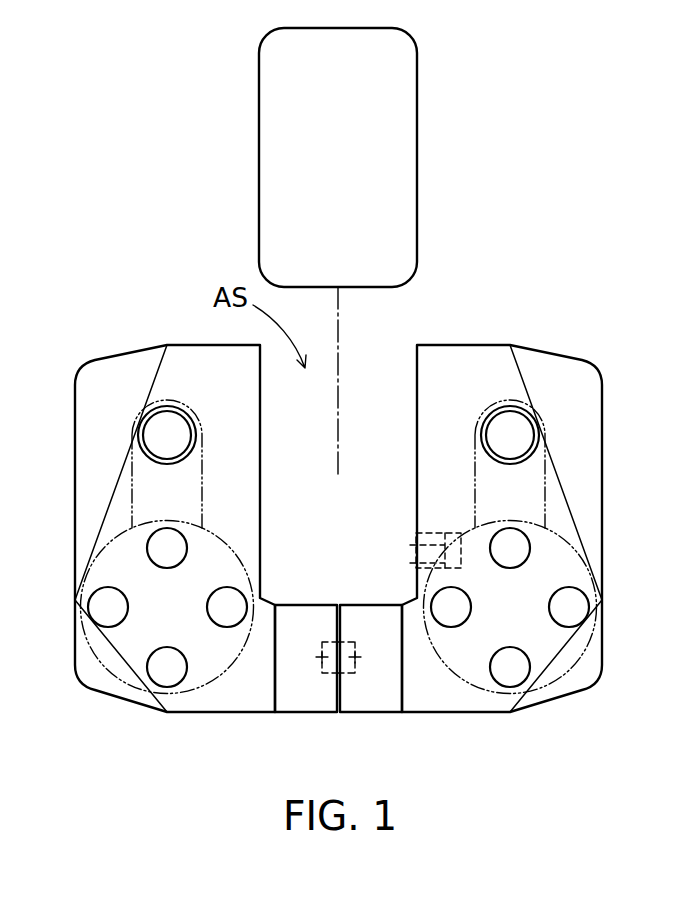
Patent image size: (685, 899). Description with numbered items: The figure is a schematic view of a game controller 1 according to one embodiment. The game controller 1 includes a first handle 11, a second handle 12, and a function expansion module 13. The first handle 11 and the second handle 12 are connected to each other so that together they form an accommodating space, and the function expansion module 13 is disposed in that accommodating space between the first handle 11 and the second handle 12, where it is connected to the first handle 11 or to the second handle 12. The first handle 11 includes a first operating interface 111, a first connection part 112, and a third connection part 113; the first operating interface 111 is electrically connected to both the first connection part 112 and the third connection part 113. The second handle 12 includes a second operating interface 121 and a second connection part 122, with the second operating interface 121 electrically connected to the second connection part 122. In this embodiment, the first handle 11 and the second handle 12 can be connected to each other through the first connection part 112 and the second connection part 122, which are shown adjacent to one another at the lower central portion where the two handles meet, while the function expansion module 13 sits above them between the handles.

The game controller 1 is at (340, 502).
The first handle 11 is at (493, 508).
The first operating interface 111 is at (545, 485).
The first connection part 112 is at (355, 657).
The third connection part 113 is at (412, 550).
The second handle 12 is at (143, 508).
The second operating interface 121 is at (132, 485).
The second connection part 122 is at (322, 657).
The function expansion module 13 is at (417, 158).